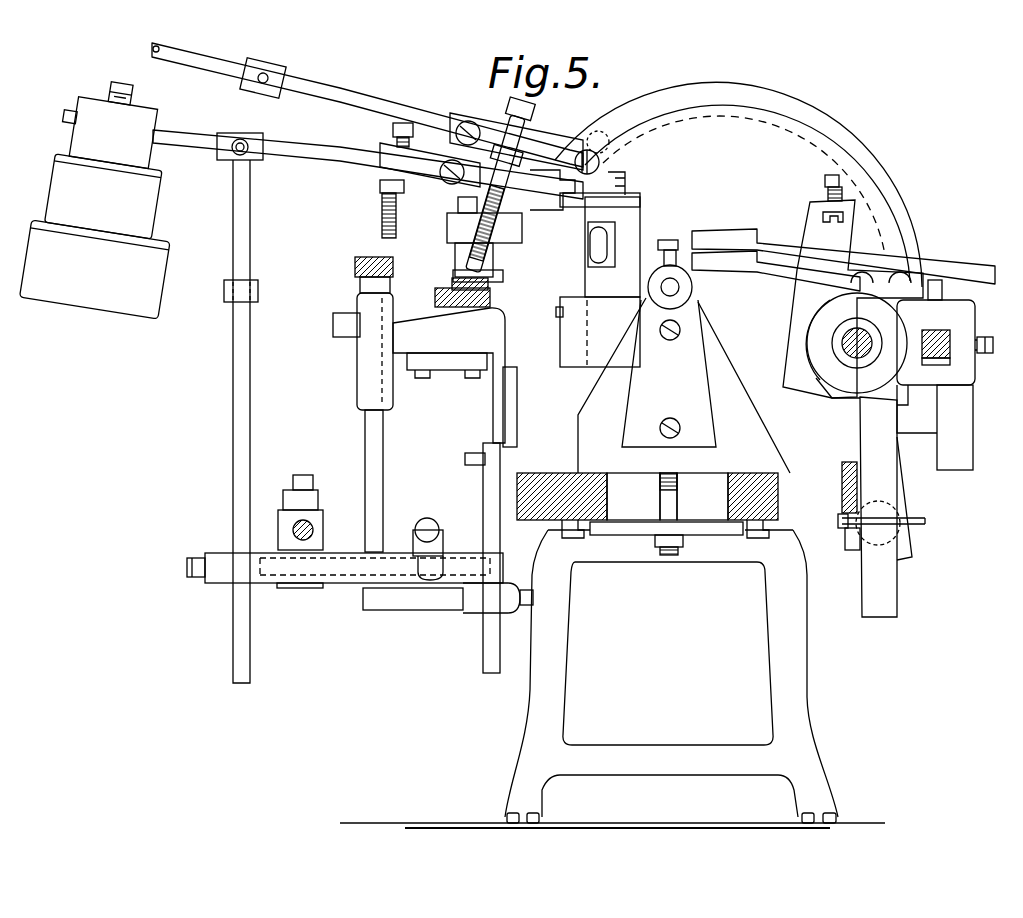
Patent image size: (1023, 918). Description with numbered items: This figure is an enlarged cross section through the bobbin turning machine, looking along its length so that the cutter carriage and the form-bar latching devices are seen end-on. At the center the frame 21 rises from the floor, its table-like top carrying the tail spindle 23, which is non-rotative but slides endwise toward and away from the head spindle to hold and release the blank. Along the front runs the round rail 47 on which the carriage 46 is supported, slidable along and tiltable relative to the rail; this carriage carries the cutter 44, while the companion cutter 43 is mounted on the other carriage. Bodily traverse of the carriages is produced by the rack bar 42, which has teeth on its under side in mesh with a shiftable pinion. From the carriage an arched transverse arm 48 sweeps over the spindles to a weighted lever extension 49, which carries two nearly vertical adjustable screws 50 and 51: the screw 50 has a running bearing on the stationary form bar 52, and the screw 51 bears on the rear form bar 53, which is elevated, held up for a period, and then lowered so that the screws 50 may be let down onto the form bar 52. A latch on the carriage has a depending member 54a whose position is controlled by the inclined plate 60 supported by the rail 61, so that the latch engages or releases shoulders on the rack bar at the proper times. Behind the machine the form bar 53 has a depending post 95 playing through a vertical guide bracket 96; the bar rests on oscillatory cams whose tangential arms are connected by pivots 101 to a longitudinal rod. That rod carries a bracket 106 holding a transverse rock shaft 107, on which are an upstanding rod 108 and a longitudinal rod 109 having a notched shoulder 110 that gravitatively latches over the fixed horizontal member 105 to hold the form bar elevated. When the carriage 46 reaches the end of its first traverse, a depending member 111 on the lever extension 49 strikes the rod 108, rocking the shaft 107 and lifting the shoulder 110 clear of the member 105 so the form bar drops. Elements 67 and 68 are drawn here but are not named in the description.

The frame 21 is at (592, 497).
The tail spindle 23 is at (680, 298).
The rack bar 42 is at (950, 332).
The cutter 43 is at (722, 240).
The cutter 44 is at (716, 262).
The carriage 46 is at (797, 352).
The round rail 47 is at (842, 360).
The arched transverse arm 48 is at (795, 110).
The weighted lever extension 49 is at (340, 101).
The adjustable screw 50 is at (476, 187).
The adjustable screw 51 is at (380, 210).
The form bar 52 is at (435, 298).
The form bar 53 is at (356, 272).
The depending member 54a is at (905, 540).
The inclined plate 60 is at (870, 520).
The rail 61 is at (842, 492).
The leg 67 is at (950, 432).
The screw 68 is at (995, 361).
The depending post 95 is at (382, 447).
The vertical guide bracket 96 is at (357, 372).
The pivot 101 is at (293, 532).
The fixed horizontal member 105 is at (440, 602).
The bracket 106 is at (322, 540).
The rock shaft 107 is at (362, 590).
The upstanding rod 108 is at (250, 434).
The rod 109 is at (427, 518).
The notched shoulder 110 is at (445, 547).
The depending member 111 is at (250, 212).